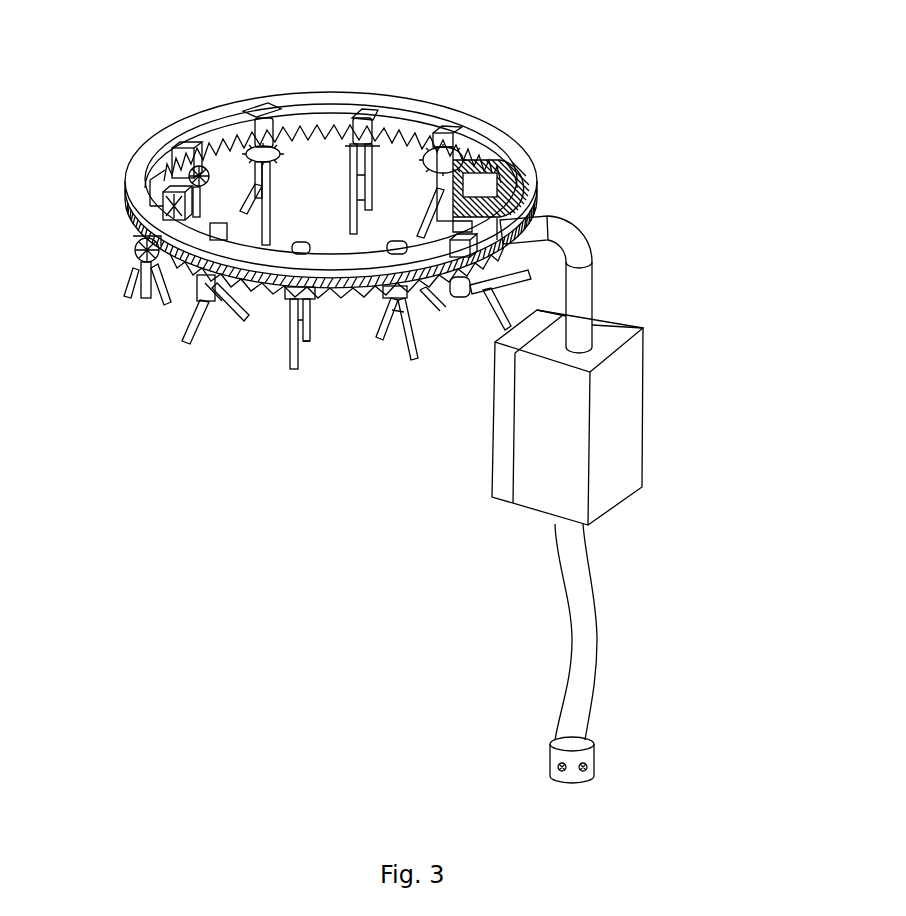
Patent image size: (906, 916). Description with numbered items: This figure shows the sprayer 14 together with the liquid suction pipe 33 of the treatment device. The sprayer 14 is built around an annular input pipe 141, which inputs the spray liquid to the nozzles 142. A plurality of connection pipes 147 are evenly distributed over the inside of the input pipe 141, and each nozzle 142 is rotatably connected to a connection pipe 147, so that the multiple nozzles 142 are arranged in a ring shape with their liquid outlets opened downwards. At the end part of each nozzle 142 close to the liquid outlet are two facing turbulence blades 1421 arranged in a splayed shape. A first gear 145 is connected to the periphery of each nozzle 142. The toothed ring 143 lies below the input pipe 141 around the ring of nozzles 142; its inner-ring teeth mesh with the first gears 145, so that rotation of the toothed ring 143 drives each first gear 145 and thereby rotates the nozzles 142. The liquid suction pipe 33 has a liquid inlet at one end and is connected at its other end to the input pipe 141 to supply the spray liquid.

The sprayer 14 is at (410, 402).
The input pipe 141 is at (323, 99).
The nozzle 142 is at (253, 156).
The turbulence blade 1421 is at (290, 368).
The toothed ring 143 is at (140, 230).
The first gear 145 is at (465, 152).
The connection pipe 147 is at (370, 108).
The liquid suction pipe 33 is at (596, 260).